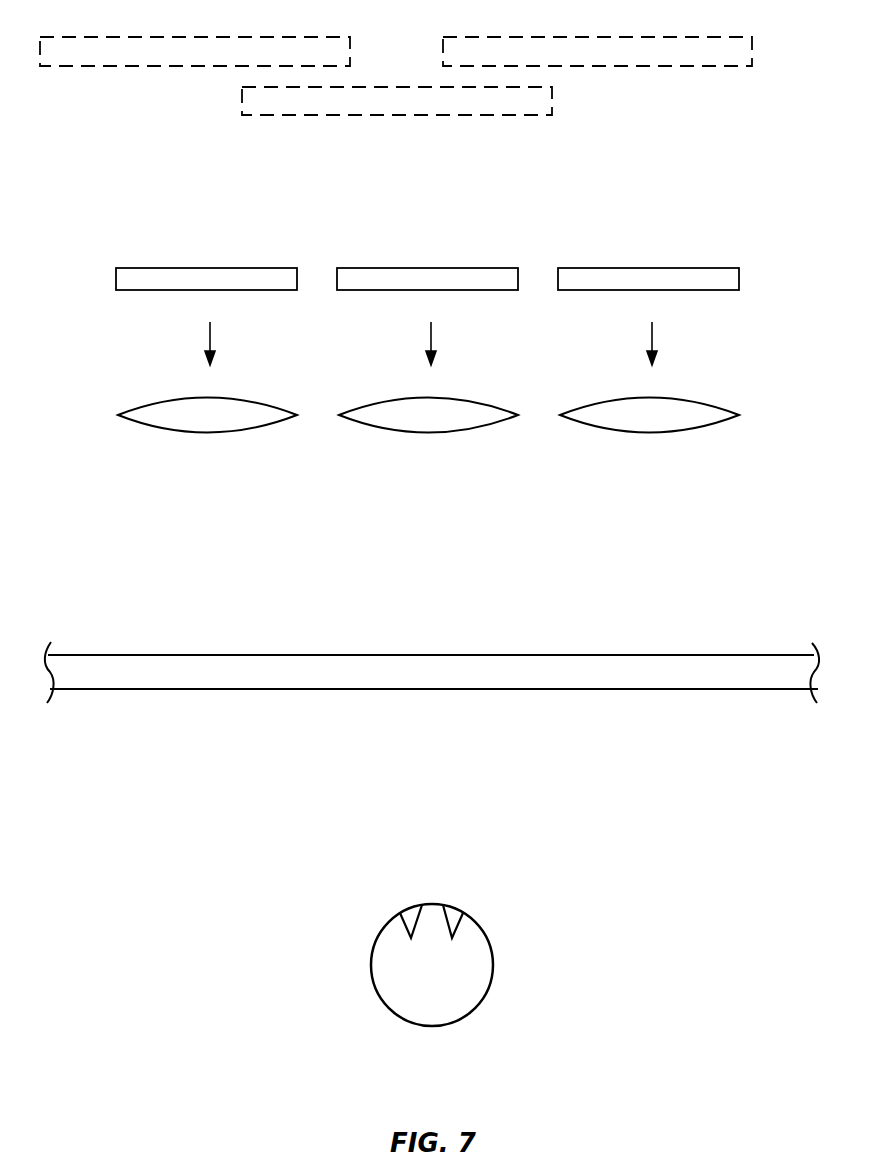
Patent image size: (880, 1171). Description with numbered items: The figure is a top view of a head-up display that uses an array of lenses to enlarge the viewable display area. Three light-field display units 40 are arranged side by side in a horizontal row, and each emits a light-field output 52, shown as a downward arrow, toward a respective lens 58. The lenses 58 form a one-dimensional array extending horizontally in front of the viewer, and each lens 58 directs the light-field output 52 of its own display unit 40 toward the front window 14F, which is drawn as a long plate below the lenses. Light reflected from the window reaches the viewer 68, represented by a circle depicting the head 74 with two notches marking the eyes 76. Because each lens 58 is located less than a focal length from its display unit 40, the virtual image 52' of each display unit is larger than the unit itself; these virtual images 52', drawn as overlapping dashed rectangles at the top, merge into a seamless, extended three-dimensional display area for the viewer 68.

The virtual image 52' is at (396, 109).
The light-field display unit 40 is at (138, 291).
The light-field output 52 is at (462, 341).
The lens 58 is at (203, 434).
The front window 14F is at (761, 666).
The head 74 is at (493, 967).
The eyes 76 is at (456, 912).
The viewer 68 is at (475, 1027).